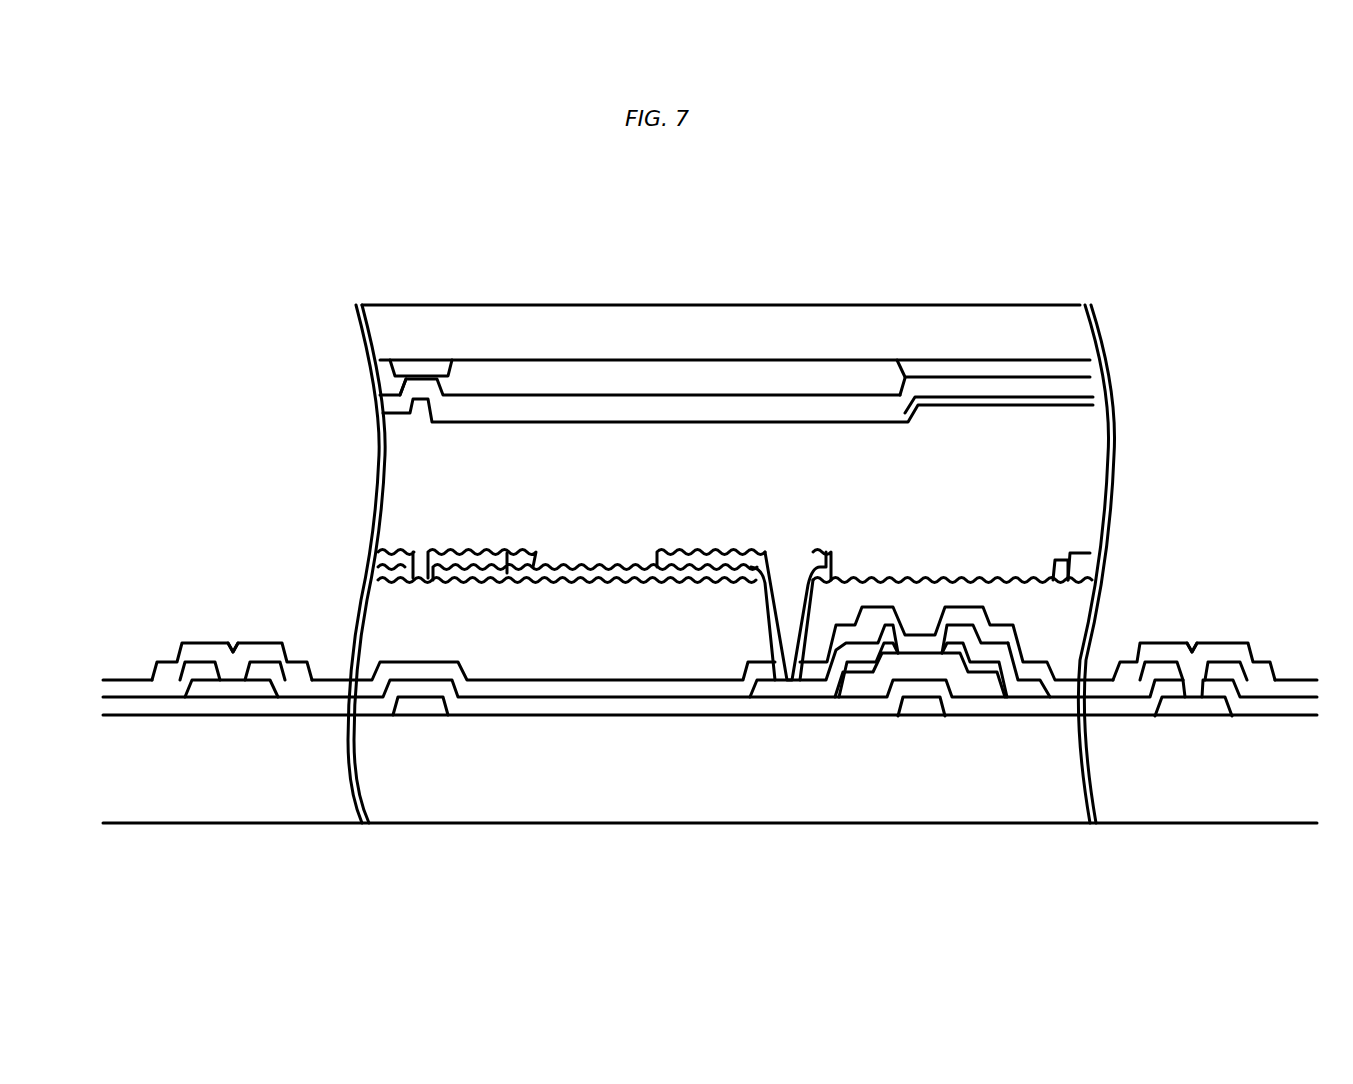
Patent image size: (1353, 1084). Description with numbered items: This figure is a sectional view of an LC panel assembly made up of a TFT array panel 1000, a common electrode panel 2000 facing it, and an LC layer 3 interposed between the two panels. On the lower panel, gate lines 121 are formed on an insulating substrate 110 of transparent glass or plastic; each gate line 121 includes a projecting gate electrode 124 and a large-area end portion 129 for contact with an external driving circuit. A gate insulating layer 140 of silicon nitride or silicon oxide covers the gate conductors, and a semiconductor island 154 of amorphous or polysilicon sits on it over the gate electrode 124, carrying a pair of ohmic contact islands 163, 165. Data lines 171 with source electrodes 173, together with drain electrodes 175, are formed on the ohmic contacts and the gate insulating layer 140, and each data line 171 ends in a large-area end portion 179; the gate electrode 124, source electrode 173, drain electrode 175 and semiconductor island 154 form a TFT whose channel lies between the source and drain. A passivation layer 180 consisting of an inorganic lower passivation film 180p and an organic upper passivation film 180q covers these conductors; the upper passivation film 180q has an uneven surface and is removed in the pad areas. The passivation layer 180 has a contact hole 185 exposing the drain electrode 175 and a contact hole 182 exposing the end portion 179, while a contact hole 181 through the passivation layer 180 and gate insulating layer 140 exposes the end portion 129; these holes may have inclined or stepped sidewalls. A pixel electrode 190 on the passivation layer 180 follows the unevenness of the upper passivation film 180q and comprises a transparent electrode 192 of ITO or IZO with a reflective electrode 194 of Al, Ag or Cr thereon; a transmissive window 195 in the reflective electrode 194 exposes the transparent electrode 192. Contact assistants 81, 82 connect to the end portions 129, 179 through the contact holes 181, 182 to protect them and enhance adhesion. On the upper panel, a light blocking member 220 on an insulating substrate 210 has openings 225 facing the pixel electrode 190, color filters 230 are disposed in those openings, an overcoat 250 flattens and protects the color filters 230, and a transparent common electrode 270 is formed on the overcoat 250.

The common electrode panel 2000 is at (362, 277).
The TFT array panel 1000 is at (142, 840).
The insulating substrate 210 is at (742, 320).
The light blocking member 220 is at (420, 367).
The openings 225 is at (457, 372).
The color filters 230 is at (620, 377).
The overcoat 250 is at (812, 403).
The common electrode 270 is at (560, 417).
The LC layer 3 is at (412, 455).
The pixel electrodes 190 is at (457, 506).
The transparent electrode 192 is at (507, 570).
The reflective electrode 194 is at (405, 553).
The transmissive window 195 is at (593, 557).
The contact hole 185 is at (790, 628).
The insulating substrate 110 is at (723, 800).
The gate lines 121 is at (422, 705).
The gate electrodes 124 is at (920, 707).
The end portion 129 is at (1198, 707).
The gate insulating layer 140 is at (655, 705).
The semiconductor islands 154 is at (878, 685).
The ohmic contact island 163 is at (982, 667).
The ohmic contact island 165 is at (855, 667).
The data lines 171 is at (1027, 690).
The source electrodes 173 is at (955, 637).
The drain electrodes 175 is at (793, 690).
The end portion 179 is at (233, 688).
The passivation layer 180 is at (303, 687).
The lower passivation film 180p is at (562, 692).
The upper passivation film 180q is at (513, 667).
The contact hole 181 is at (1187, 673).
The contact hole 182 is at (233, 650).
The contact assistant 81 is at (1228, 652).
The contact assistant 82 is at (197, 652).